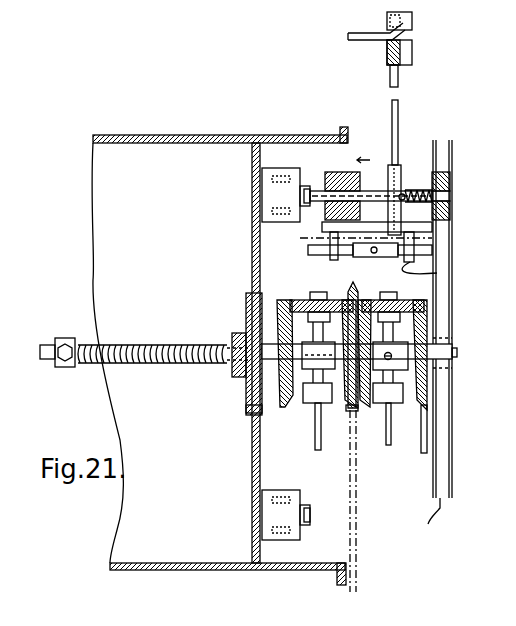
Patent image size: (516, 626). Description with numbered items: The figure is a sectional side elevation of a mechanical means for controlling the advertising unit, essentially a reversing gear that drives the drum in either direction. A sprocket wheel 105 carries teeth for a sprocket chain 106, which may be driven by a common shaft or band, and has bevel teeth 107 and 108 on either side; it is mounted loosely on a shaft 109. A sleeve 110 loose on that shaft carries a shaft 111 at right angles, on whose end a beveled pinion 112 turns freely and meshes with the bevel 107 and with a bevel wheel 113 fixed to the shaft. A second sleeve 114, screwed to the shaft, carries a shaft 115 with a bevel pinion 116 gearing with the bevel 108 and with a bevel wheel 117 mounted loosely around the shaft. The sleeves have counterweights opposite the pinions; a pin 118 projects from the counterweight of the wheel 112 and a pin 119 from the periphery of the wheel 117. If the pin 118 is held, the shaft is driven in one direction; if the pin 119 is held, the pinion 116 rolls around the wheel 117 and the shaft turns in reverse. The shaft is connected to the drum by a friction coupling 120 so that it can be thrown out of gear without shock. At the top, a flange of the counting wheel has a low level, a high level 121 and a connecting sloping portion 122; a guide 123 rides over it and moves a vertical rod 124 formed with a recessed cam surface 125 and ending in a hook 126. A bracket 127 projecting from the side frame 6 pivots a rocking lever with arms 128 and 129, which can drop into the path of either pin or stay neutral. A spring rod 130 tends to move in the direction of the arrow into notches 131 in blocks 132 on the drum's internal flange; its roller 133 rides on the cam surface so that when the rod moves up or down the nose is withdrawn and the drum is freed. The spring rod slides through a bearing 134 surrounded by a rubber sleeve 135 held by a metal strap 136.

The frame member 6 is at (432, 517).
The sprocket wheel 105 is at (358, 420).
The sprocket chain 106 is at (356, 550).
The bevel teeth 107 is at (348, 403).
The bevel teeth 108 is at (365, 405).
The shaft 109 is at (457, 353).
The sleeve 110 is at (312, 358).
The shaft 111 is at (313, 323).
The beveled pinion 112 is at (347, 297).
The bevel wheel 113 is at (262, 418).
The sleeve 114 is at (408, 405).
The shaft 115 is at (397, 332).
The bevel pinion 116 is at (412, 305).
The bevel wheel 117 is at (428, 385).
The projecting pin or rod 118 is at (315, 445).
The projecting pin or rod 119 is at (428, 447).
The friction coupling 120 is at (244, 305).
The high level portion 121 is at (412, 20).
The sloping portion 122 is at (391, 30).
The guide 123 is at (412, 45).
The vertically moving rod 124 is at (398, 118).
The cam surface 125 is at (432, 148).
The hook 126 is at (437, 273).
The bracket 127 is at (322, 227).
The arm 128 is at (310, 250).
The arm 129 is at (430, 248).
The spring rod 130 is at (375, 192).
The notches 131 is at (302, 195).
The blocks 132 is at (272, 180).
The roller 133 is at (452, 205).
The bearing 134 is at (312, 140).
The rubber block or sleeve 135 is at (328, 175).
The metal strap 136 is at (338, 172).